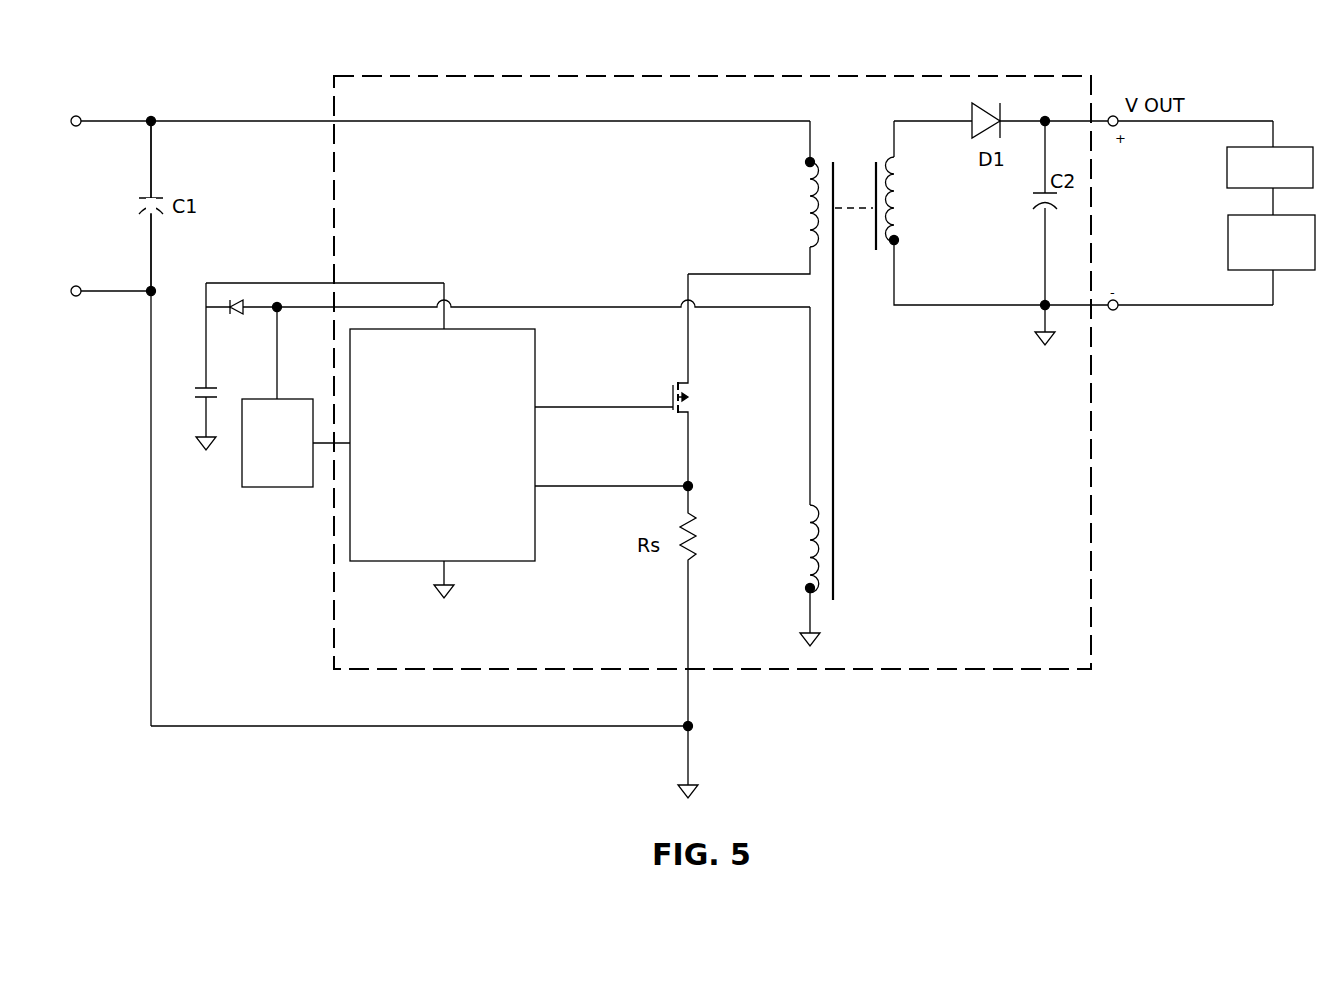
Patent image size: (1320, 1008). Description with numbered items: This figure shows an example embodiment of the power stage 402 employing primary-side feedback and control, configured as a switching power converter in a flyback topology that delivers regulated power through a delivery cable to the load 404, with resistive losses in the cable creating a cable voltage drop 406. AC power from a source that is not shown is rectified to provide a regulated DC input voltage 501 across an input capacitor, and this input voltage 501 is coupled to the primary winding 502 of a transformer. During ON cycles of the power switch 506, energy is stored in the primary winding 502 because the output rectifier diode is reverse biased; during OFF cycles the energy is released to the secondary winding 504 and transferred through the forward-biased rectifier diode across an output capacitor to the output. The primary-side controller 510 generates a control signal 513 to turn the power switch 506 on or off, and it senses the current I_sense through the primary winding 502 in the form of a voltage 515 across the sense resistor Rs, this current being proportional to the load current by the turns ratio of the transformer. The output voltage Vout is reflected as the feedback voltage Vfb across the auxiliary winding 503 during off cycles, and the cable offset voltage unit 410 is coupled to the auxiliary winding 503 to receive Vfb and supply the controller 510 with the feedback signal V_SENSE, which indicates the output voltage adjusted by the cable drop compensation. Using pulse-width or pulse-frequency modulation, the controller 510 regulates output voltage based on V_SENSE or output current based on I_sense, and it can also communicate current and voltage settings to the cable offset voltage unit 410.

The power stage 402 is at (1035, 670).
The load 404 is at (1271, 246).
The cable voltage drop 406 is at (1270, 154).
The cable offset voltage unit 410 is at (502, 385).
The input voltage 501 is at (438, 421).
The primary winding 502 is at (790, 189).
The auxiliary winding 503 is at (807, 551).
The secondary winding 504 is at (906, 204).
The power switch 506 is at (672, 385).
The controller 510 is at (535, 555).
The control signal 513 is at (604, 396).
The voltage across sense resistor 515 is at (614, 477).